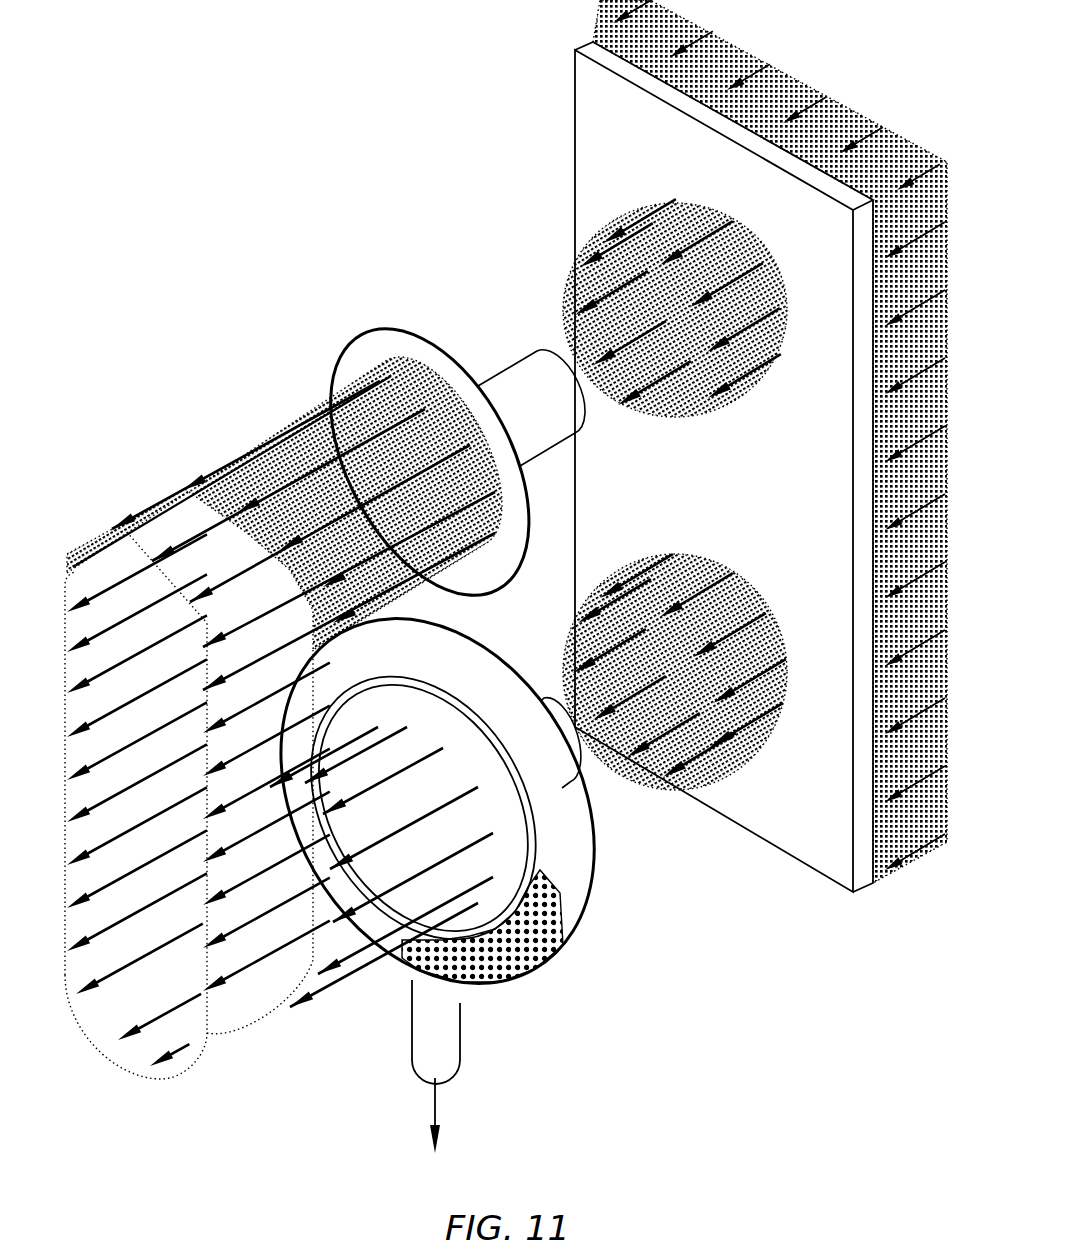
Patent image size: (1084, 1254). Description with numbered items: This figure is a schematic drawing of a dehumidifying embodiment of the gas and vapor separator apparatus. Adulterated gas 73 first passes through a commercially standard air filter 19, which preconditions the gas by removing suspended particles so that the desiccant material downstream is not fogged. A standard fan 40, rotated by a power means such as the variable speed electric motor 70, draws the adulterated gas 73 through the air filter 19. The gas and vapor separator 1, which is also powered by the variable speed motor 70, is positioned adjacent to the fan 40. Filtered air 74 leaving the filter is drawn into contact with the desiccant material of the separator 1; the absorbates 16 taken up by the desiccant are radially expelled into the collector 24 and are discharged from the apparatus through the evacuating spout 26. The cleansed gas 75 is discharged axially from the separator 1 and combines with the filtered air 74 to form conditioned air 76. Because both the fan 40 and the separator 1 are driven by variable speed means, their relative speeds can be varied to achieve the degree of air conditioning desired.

The gas and vapor separator 1 is at (504, 975).
The absorbates 16 is at (450, 1098).
The air filter 19 is at (560, 98).
The collector 24 is at (478, 637).
The evacuating spout 26 is at (400, 1058).
The fan 40 is at (333, 340).
The variable speed electric motor 70 is at (510, 345).
The adulterated gas 73 is at (760, 51).
The filtered air 74 is at (578, 249).
The cleansed gas 75 is at (351, 985).
The conditioned air 76 is at (129, 516).